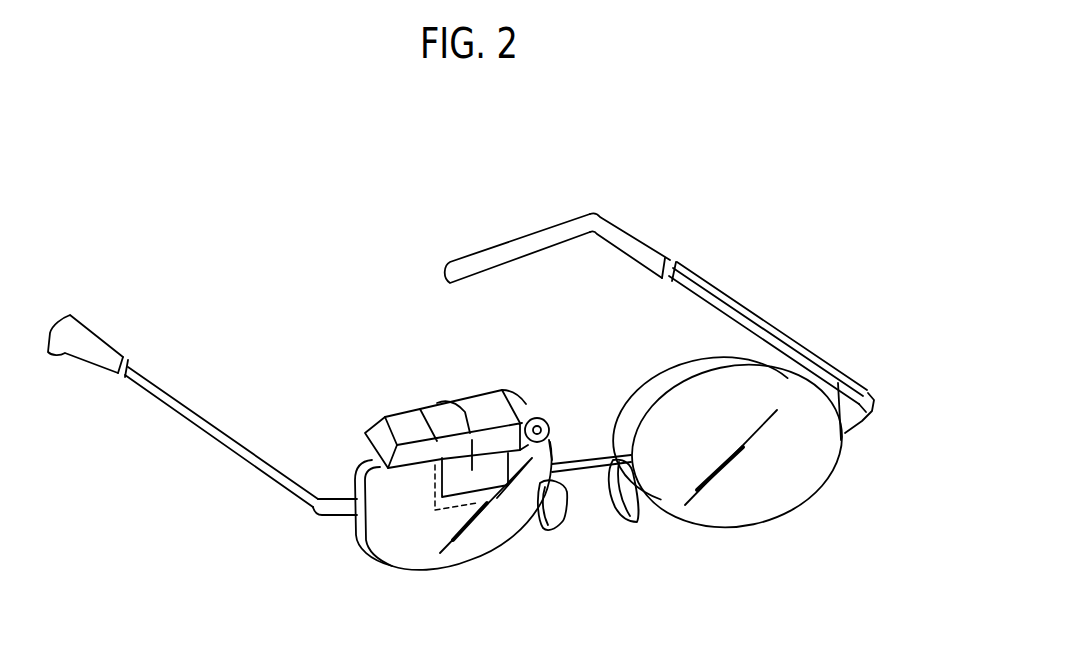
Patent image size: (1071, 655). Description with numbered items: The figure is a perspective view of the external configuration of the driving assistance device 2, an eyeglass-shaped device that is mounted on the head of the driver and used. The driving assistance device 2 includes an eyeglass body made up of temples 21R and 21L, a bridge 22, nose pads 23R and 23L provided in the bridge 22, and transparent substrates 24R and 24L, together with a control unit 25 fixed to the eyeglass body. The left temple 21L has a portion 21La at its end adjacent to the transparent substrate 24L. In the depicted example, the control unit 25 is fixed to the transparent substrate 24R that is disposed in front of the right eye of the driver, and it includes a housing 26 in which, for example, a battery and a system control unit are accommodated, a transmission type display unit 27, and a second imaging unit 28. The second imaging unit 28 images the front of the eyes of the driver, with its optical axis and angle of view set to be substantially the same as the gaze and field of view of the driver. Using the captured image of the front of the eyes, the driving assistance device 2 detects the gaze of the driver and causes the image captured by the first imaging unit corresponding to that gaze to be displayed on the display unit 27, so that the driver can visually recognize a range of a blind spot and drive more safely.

The driving assistance device 2 is at (445, 183).
The temple 21R is at (233, 443).
The temple 21L is at (720, 300).
The hinge portion of left temple 21La is at (870, 393).
The bridge 22 is at (597, 473).
The nose pad 23L is at (620, 452).
The nose pad 23R is at (553, 540).
The transparent substrate 24L is at (780, 475).
The transparent substrate 24R is at (462, 548).
The control unit 25 is at (447, 388).
The housing 26 is at (402, 425).
The display unit 27 is at (437, 413).
The second imaging unit 28 is at (527, 383).